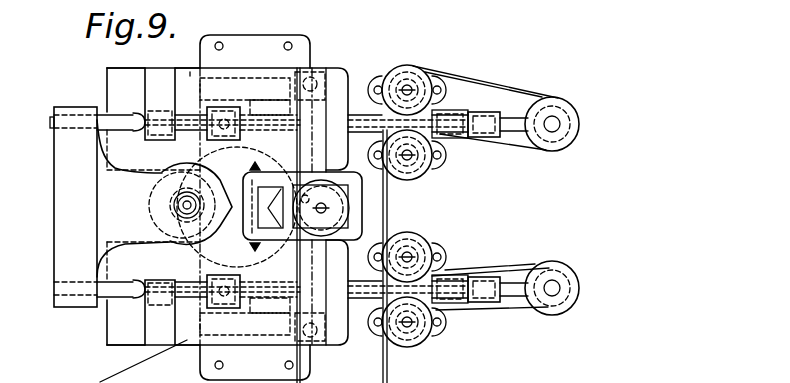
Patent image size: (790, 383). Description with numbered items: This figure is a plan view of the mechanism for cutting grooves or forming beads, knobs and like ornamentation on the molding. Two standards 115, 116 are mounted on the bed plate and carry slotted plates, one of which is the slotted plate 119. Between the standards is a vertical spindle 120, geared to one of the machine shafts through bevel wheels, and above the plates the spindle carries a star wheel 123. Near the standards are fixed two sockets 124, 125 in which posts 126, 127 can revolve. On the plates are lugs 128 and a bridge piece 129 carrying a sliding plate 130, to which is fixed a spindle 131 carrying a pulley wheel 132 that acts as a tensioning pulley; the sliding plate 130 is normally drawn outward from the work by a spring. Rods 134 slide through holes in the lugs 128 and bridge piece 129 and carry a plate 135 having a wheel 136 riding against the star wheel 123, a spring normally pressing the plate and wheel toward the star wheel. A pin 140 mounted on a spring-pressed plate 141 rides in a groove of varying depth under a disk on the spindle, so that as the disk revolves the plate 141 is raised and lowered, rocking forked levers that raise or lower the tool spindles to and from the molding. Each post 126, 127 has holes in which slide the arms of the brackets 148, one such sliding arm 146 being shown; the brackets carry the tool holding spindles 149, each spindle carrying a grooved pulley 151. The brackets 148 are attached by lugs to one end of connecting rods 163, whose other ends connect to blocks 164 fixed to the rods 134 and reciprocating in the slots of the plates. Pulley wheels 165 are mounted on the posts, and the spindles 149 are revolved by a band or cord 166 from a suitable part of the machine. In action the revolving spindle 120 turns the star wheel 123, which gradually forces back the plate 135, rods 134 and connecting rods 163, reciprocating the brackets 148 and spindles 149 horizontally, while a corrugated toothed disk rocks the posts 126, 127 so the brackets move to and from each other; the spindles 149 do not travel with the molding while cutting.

The standard 115 is at (202, 368).
The standard 116 is at (267, 37).
The slotted plate 119 is at (190, 72).
The vertical spindle 120 is at (228, 222).
The star wheel 123 is at (225, 222).
The socket 124 is at (447, 270).
The socket 125 is at (440, 86).
The post 126 is at (482, 273).
The post 127 is at (443, 118).
The lug 128 is at (158, 119).
The bridge piece 129 is at (297, 193).
The sliding plate 130 is at (350, 212).
The spindle 131 is at (352, 206).
The pulley wheel 132 is at (348, 216).
The rod 134 is at (186, 122).
The plate 135 is at (70, 137).
The wheel 136 is at (230, 233).
The pin 140 is at (340, 208).
The plate 141 is at (420, 222).
The sliding arm 146 is at (447, 123).
The bracket 148 is at (510, 120).
The tool holding spindle 149 is at (553, 124).
The grooved pulley 151 is at (578, 116).
The connecting rod 163 is at (282, 125).
The block 164 is at (215, 108).
The pulley wheel 165 is at (410, 72).
The band or cord 166 is at (502, 85).